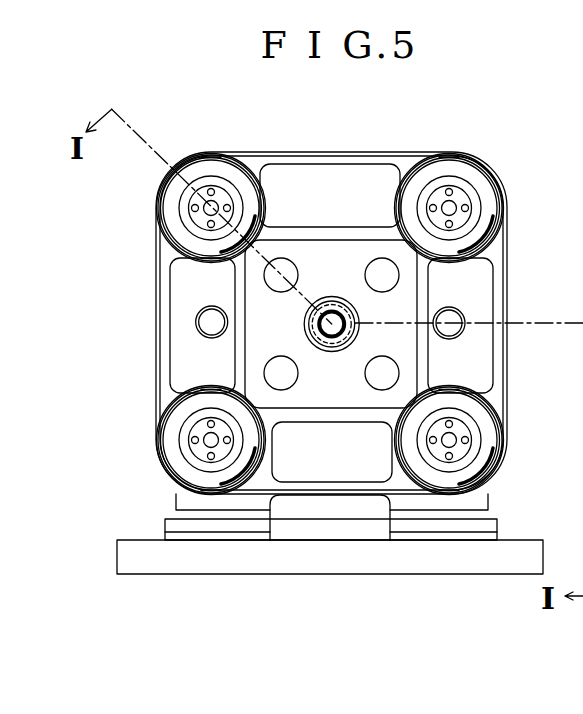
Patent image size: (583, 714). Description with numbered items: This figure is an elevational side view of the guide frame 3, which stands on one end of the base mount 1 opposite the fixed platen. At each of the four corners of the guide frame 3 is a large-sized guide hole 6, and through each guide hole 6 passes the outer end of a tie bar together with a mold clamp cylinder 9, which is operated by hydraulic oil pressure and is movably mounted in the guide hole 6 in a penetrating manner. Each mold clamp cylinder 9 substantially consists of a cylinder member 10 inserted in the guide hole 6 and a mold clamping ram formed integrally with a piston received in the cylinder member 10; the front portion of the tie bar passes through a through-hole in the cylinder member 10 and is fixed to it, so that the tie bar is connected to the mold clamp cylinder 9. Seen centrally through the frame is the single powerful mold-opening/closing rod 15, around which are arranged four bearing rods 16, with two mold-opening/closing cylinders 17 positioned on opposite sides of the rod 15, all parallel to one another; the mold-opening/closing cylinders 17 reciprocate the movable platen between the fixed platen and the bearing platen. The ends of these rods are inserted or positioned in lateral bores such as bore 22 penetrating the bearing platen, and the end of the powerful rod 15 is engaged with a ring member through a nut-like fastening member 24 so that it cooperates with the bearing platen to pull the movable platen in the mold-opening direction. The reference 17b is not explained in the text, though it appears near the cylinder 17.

The base mount 1 is at (369, 560).
The guide frame 3 is at (335, 152).
The guide hole 6 is at (170, 237).
The mold clamp cylinder 9 is at (197, 157).
The cylinder member 10 is at (177, 197).
The powerful mold-opening/closing rod 15 is at (329, 313).
The bearing rod 16 is at (300, 252).
The mold-opening/closing cylinder 17 is at (198, 312).
The side hole 17b is at (208, 327).
The lateral bore 22 is at (281, 258).
The nut-like fastening member 24 is at (312, 325).